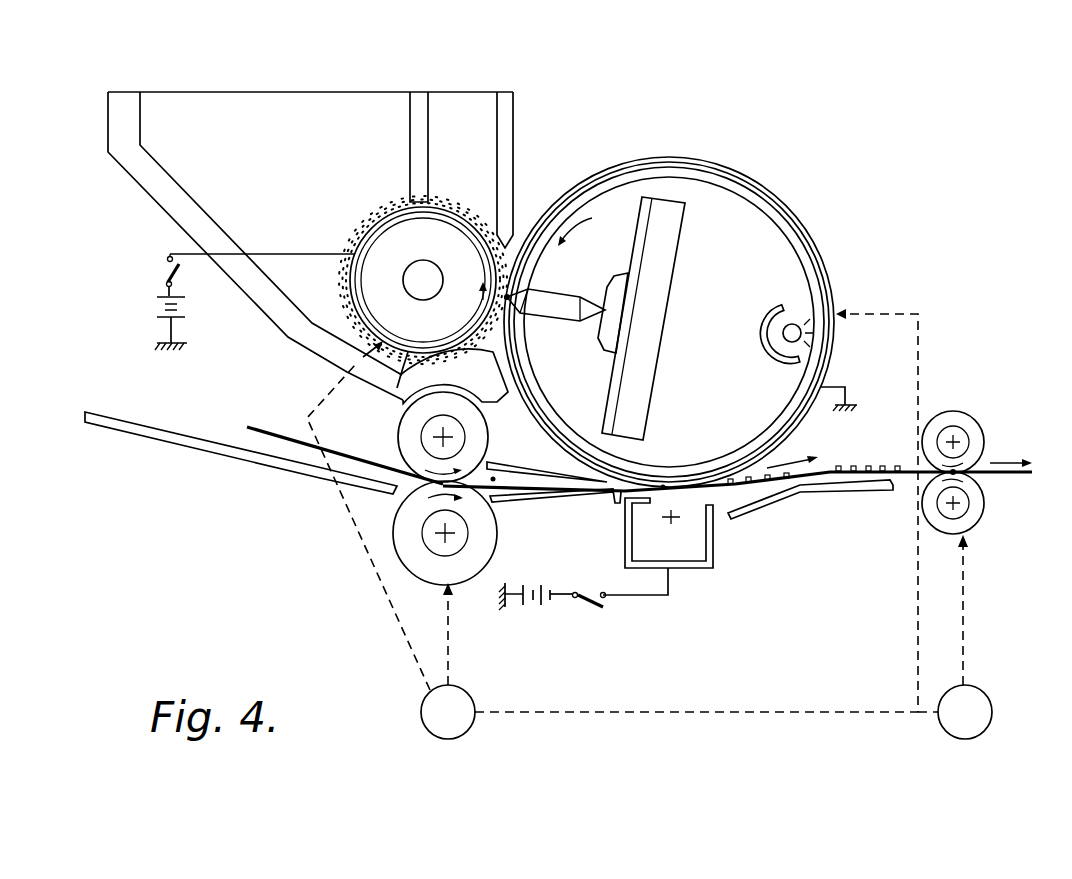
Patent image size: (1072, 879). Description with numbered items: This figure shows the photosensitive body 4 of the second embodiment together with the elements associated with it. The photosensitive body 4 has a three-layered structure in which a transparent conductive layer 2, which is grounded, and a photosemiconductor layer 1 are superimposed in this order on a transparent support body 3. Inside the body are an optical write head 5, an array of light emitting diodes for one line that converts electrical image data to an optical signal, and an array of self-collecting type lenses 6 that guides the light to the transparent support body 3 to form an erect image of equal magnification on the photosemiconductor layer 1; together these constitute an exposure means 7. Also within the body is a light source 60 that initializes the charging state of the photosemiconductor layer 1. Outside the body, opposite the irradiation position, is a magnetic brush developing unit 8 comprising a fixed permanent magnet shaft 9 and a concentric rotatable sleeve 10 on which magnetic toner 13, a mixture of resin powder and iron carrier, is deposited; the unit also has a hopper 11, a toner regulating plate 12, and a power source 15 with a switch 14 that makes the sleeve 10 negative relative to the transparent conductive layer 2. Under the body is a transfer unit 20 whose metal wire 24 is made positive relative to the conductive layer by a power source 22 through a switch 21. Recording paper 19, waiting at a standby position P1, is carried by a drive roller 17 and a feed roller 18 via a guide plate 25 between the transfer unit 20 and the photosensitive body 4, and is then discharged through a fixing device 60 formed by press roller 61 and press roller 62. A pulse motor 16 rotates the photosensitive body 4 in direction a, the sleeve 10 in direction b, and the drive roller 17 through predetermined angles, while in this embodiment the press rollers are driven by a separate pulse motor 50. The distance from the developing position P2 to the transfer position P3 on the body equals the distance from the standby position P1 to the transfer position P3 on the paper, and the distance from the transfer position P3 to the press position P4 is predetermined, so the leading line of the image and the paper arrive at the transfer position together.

The photosemiconductor layer 1 is at (598, 178).
The transparent conductive layer 2 is at (741, 455).
The transparent support body 3 is at (796, 403).
The photosensitive body 4 is at (806, 215).
The optical write head 5 is at (650, 393).
The array of self-collecting type lenses 6 is at (560, 298).
The exposure means 7 is at (683, 273).
The magnetic brush developing unit 8 is at (427, 92).
The fixed permanent magnet shaft 9 is at (418, 287).
The sleeve 10 is at (368, 228).
The hopper 11 is at (273, 168).
The toner regulating plate 12 is at (425, 163).
The magnetic toner 13 is at (388, 390).
The switch 14 is at (163, 269).
The power source 15 is at (157, 312).
The pulse motor 16 is at (421, 712).
The drive roller 17 is at (440, 575).
The feed roller 18 is at (398, 437).
The recording paper 19 is at (268, 428).
The transfer unit 20 is at (719, 544).
The switch 21 is at (593, 610).
The power source 22 is at (537, 578).
The metal wire 24 is at (672, 522).
The guide plate 25 is at (562, 494).
The pulse motor 50 is at (992, 710).
The fixing device 60 is at (770, 318).
The press roller 61 is at (976, 428).
The press roller 62 is at (978, 520).
The standby position P1 is at (493, 478).
The developing position P2 is at (511, 300).
The transfer position P3 is at (663, 487).
The press position P4 is at (947, 476).
The rotation direction of the photosensitive body a is at (575, 233).
The rotation direction of the sleeve b is at (474, 285).